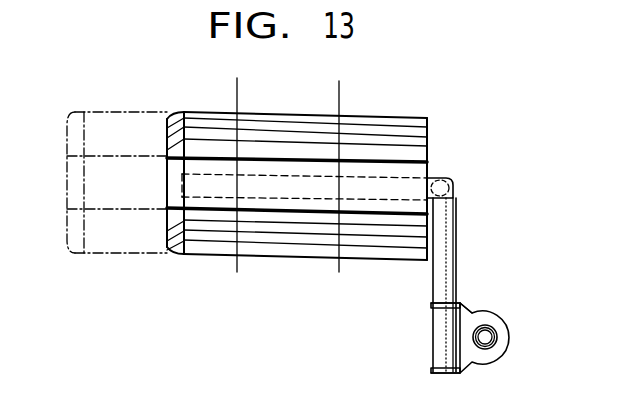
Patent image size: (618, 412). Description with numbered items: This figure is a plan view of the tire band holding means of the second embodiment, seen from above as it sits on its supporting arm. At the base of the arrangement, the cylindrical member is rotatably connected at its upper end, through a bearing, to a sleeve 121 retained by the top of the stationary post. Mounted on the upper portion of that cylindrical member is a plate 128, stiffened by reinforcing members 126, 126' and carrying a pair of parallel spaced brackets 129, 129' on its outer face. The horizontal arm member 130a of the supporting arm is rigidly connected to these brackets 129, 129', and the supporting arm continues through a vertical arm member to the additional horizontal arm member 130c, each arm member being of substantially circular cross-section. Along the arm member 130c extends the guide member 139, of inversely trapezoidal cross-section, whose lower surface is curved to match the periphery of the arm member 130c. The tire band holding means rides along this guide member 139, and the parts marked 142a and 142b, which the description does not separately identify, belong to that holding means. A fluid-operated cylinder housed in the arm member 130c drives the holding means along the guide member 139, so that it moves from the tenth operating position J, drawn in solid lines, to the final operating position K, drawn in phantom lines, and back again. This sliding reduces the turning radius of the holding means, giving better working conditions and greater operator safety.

The tenth operating position J is at (375, 115).
The final operating position K is at (136, 255).
The reference plane 142a is at (236, 108).
The reference plane 142b is at (338, 108).
The additional horizontal arm member 130c is at (410, 177).
The guide member 139 is at (452, 187).
The horizontal arm member 130a is at (457, 223).
The plate 128 is at (462, 303).
The bracket 129 is at (412, 361).
The bracket 129' is at (415, 315).
The reinforcing member 126 is at (493, 348).
The reinforcing member 126' is at (495, 298).
The sleeve 121 is at (506, 335).